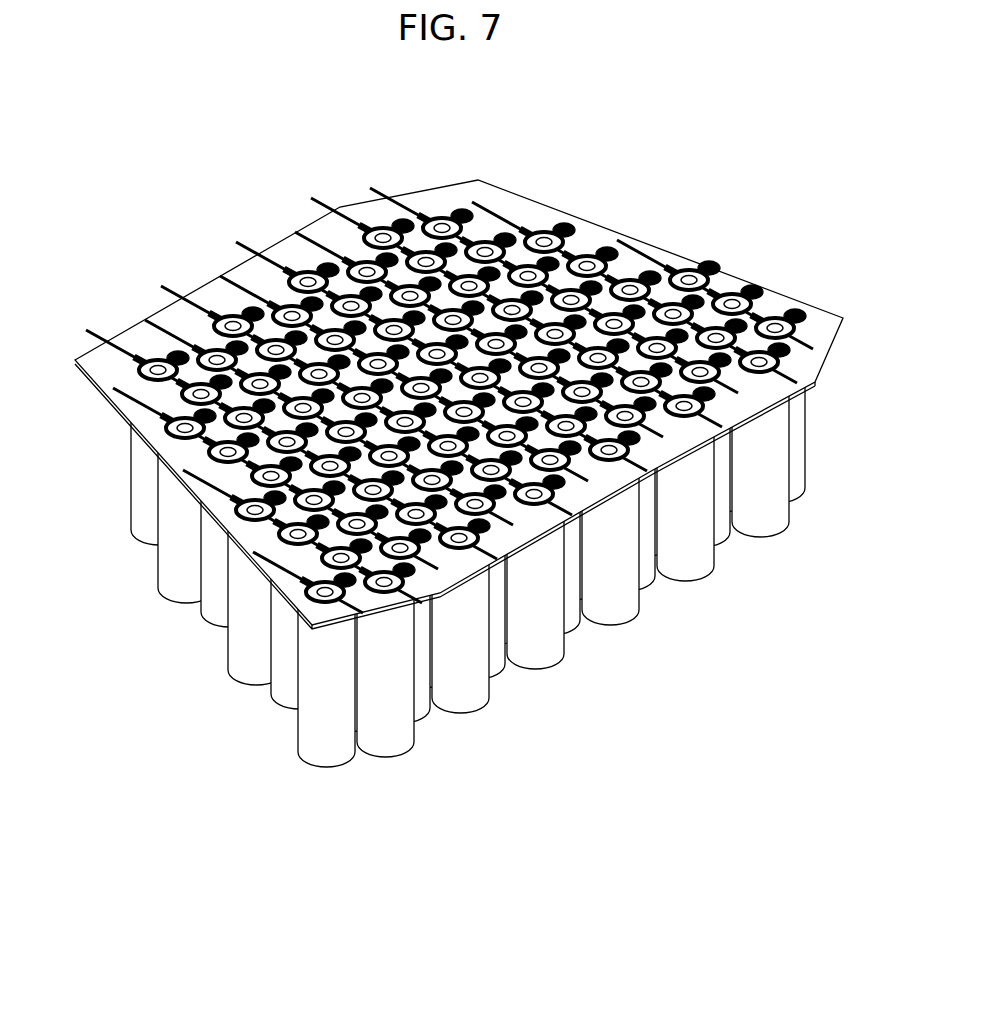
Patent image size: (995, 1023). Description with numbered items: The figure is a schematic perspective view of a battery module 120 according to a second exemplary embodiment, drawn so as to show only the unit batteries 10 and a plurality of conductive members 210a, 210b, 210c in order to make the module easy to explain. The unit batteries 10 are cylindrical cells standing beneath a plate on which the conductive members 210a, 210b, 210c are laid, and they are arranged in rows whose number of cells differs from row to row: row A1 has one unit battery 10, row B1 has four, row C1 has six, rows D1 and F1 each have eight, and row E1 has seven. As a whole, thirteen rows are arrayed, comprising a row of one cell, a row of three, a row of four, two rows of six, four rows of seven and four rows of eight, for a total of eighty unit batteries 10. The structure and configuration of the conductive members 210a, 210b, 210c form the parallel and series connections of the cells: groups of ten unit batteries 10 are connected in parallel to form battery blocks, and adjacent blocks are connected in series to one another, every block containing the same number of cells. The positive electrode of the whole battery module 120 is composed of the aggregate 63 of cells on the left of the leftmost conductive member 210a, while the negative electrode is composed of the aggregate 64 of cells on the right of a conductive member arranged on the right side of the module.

The unit battery 10 is at (438, 548).
The aggregate 63 is at (153, 498).
The aggregate 64 is at (697, 258).
The battery module 120 is at (447, 499).
The conductive member 210a is at (93, 360).
The conductive member 210b is at (143, 327).
The conductive member 210c is at (187, 307).
The row A1 is at (342, 780).
The row B1 is at (402, 772).
The row C1 is at (426, 730).
The row D1 is at (480, 727).
The row E1 is at (508, 688).
The row F1 is at (558, 682).